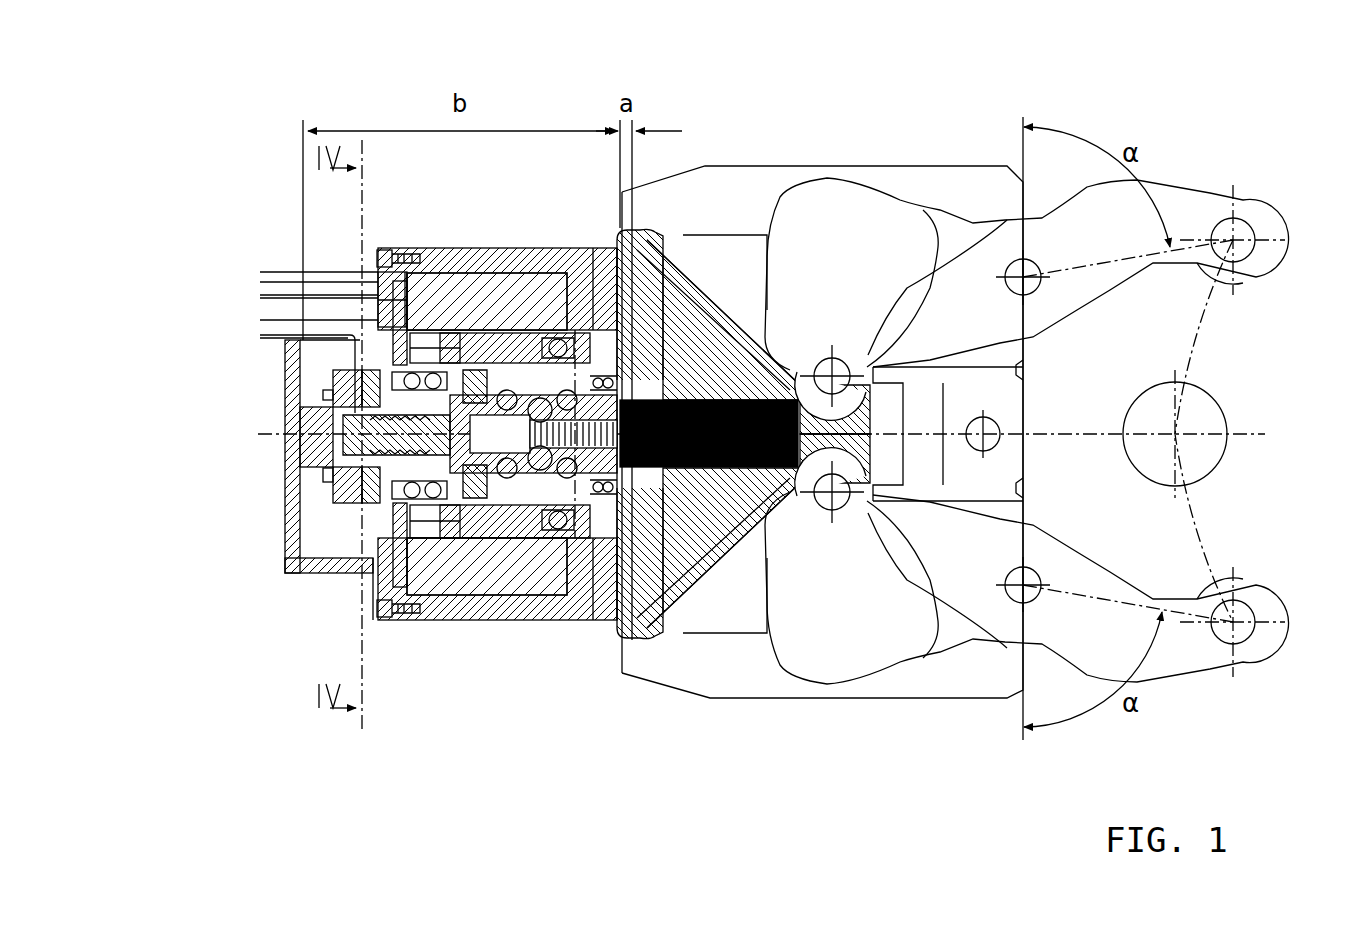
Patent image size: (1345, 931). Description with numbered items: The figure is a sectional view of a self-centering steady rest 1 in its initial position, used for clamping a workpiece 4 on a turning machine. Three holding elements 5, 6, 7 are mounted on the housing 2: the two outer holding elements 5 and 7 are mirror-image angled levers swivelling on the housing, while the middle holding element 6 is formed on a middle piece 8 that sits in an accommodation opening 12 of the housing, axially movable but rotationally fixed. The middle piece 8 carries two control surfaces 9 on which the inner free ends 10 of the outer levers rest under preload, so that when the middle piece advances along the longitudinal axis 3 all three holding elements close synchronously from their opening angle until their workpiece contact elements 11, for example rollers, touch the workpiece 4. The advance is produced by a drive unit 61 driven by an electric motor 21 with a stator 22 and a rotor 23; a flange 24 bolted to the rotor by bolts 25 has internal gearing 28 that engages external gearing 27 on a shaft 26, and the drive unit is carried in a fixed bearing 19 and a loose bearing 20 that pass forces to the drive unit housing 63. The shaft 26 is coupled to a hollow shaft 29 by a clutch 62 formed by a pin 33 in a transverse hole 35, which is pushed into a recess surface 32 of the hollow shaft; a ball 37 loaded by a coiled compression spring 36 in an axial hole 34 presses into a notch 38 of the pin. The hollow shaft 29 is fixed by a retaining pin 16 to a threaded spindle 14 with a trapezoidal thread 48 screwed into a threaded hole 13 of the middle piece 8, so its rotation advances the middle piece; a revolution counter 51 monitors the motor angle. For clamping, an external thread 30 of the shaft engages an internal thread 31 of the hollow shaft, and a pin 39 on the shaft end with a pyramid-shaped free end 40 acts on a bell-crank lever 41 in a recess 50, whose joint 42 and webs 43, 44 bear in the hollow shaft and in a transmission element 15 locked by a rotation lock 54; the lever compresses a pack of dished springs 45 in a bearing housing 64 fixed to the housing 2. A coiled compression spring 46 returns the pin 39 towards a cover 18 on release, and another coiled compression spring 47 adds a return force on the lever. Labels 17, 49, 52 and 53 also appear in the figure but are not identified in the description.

The steady rest 1 is at (1162, 130).
The housing 2 is at (745, 205).
The longitudinal axis 3 is at (286, 434).
The workpiece 4 is at (1207, 417).
The outer holding element 5 is at (1200, 207).
The middle holding element 6 is at (1023, 403).
The outer holding element 7 is at (1250, 648).
The middle piece 8 is at (950, 700).
The control surfaces 9 is at (790, 360).
The inner free ends 10 is at (850, 350).
The workpiece contact elements 11 is at (1243, 288).
The accommodation opening 12 is at (653, 310).
The threaded hole 13 is at (745, 400).
The threaded spindle 14 is at (688, 620).
The transmission element 15 is at (500, 620).
The retaining pin 16 is at (575, 250).
The actuator 17 is at (660, 640).
The cover 18 is at (330, 403).
The fixed bearing 19 is at (398, 300).
The loose bearing 20 is at (478, 370).
The electric motor 21 is at (490, 250).
The stator 22 is at (475, 600).
The rotor 23 is at (475, 633).
The flange 24 is at (405, 620).
The bolts 25 is at (362, 600).
The shaft 26 is at (330, 428).
The external gearing 27 is at (370, 445).
The internal gearing 28 is at (385, 470).
The hollow shaft 29 is at (650, 640).
The external thread 30 is at (383, 292).
The internal thread 31 is at (437, 603).
The recess surface 32 is at (400, 505).
The pin 33 is at (375, 332).
The hole 34 is at (372, 296).
The hole 35 is at (340, 410).
The coiled compression spring 36 is at (400, 598).
The ball 37 is at (378, 560).
The notch 38 is at (318, 422).
The pin 39 is at (565, 625).
The pyramid-shaped free end 40 is at (445, 333).
The bell-crank lever 41 is at (430, 333).
The joint 42 is at (590, 620).
The web 43 is at (445, 340).
The web 44 is at (558, 338).
The dished springs 45 is at (468, 600).
The coiled compression spring 46 is at (604, 640).
The coiled compression spring 47 is at (612, 240).
The trapezoidal thread 48 is at (748, 620).
The bridge 49 is at (668, 360).
The recess 50 is at (540, 398).
The revolution counter 51 is at (335, 335).
The sensor 52 is at (318, 340).
The connector 53 is at (272, 300).
The rotation lock 54 is at (522, 620).
The drive unit 61 is at (556, 105).
The clutch 62 is at (212, 437).
The drive unit housing 63 is at (405, 250).
The bearing housing 64 is at (640, 640).